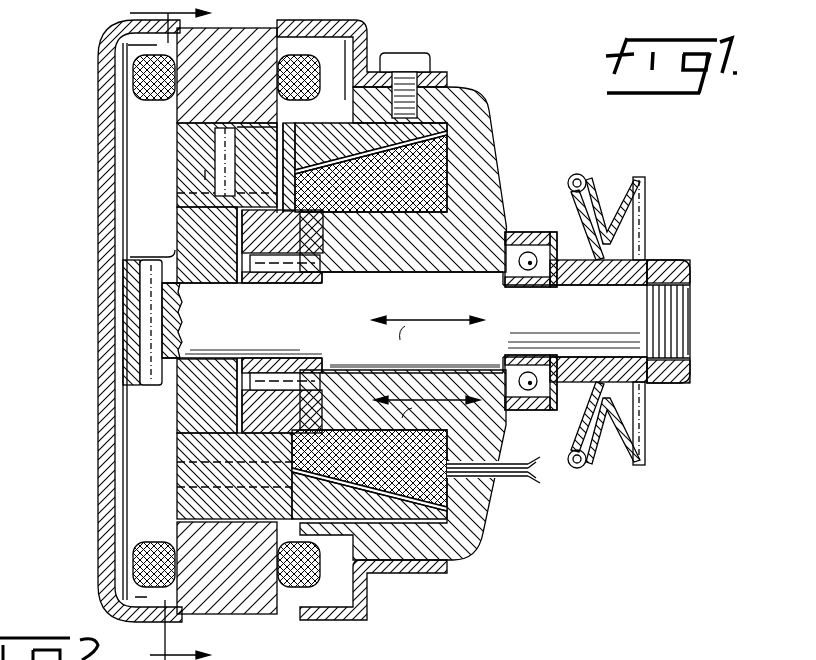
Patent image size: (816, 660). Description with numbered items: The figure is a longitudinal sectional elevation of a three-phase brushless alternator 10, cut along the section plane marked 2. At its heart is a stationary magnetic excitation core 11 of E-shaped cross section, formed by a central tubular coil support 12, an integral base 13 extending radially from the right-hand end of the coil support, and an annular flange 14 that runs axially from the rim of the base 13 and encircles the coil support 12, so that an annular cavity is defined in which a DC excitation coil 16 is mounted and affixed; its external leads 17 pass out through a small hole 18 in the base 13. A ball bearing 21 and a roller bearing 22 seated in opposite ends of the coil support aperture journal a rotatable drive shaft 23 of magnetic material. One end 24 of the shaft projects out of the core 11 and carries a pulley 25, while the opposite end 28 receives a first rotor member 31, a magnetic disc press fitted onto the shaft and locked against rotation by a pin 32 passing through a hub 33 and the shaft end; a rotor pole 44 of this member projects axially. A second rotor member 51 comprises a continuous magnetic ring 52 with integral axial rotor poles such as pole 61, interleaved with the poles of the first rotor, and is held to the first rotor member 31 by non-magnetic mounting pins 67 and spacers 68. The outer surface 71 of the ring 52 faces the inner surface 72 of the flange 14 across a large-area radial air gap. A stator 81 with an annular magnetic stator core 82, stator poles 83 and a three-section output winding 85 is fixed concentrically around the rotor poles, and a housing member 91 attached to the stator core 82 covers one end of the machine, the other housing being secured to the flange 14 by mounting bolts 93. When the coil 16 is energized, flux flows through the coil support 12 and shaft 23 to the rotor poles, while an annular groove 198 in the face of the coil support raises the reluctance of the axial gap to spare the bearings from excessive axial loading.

The section line 2- 2 is at (157, 334).
The three-phase brushless alternator 10 is at (502, 116).
The stationary magnetic excitation core 11 is at (486, 197).
The central tubular coil support 12 is at (360, 243).
The base 13 is at (470, 163).
The annular flange 14 is at (372, 97).
The DC excitation coil 16 is at (477, 522).
The external leads 17 is at (533, 480).
The hole 18 is at (488, 478).
The ball bearing 21 is at (533, 395).
The roller bearing 22 is at (237, 388).
The rotatable drive shaft 23 is at (108, 328).
The shaft end 24 is at (637, 320).
The pulley 25 is at (620, 470).
The shaft end 28 is at (160, 334).
The first rotor member 31 is at (160, 397).
The pin 32 is at (143, 370).
The hub 33 is at (127, 268).
The rotor pole 44 is at (177, 509).
The second rotor member 51 is at (333, 108).
The continuous ring 52 is at (415, 125).
The rotor pole 61 is at (212, 132).
The mounting pin 67 is at (222, 152).
The spacer 68 is at (205, 172).
The outer surface 71 is at (378, 523).
The inner surface 72 is at (400, 523).
The stator 81 is at (235, 620).
The annular magnetic stator core 82 is at (352, 621).
The stator poles 83 is at (180, 535).
The output winding 85 is at (292, 608).
The housing member 91 is at (98, 101).
The mounting bolts 93 is at (422, 53).
The annular groove 198 is at (178, 447).